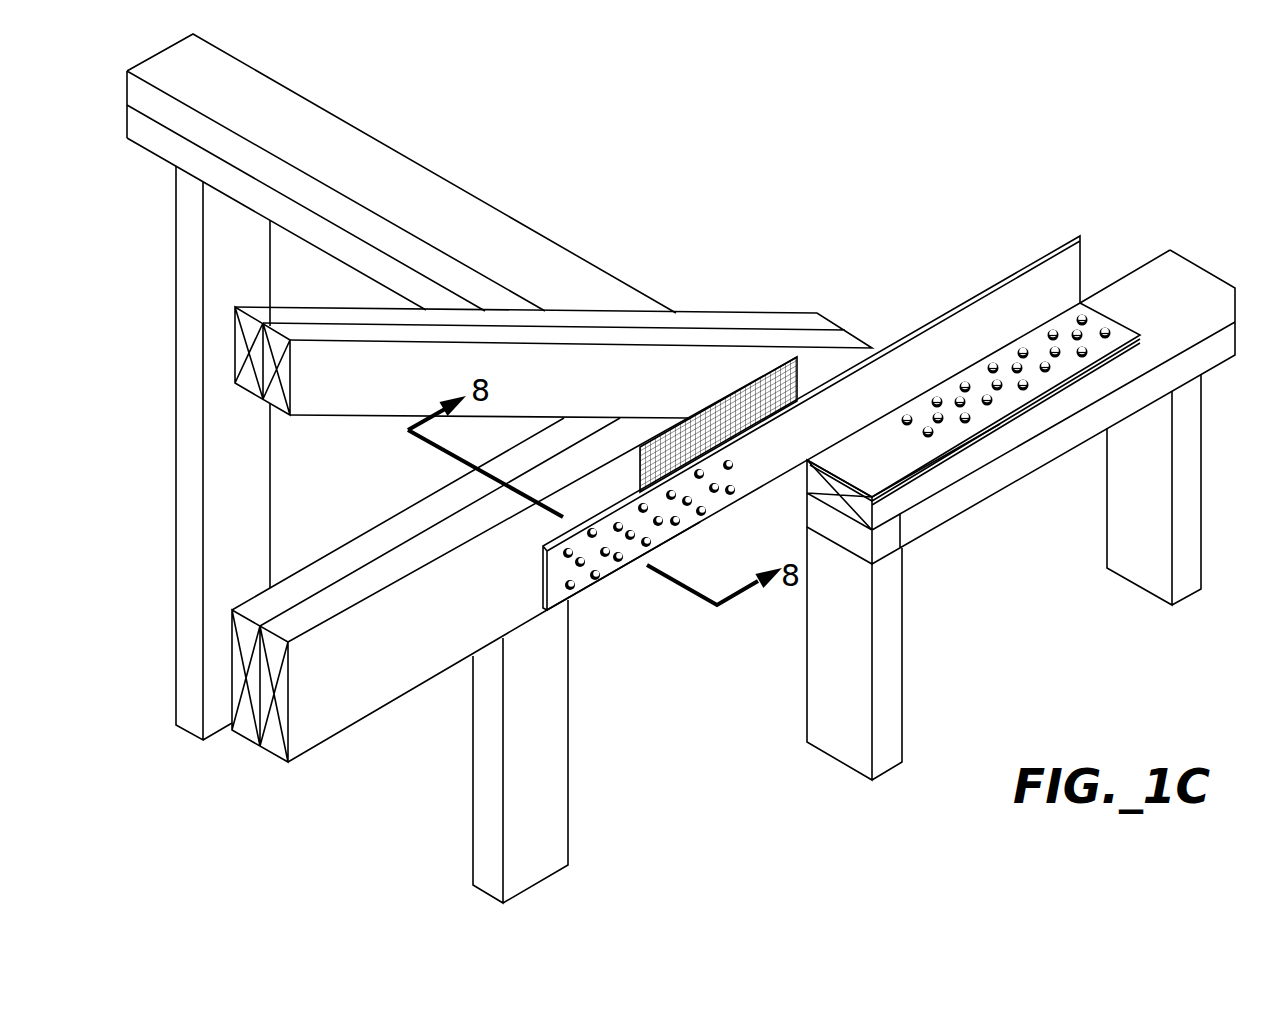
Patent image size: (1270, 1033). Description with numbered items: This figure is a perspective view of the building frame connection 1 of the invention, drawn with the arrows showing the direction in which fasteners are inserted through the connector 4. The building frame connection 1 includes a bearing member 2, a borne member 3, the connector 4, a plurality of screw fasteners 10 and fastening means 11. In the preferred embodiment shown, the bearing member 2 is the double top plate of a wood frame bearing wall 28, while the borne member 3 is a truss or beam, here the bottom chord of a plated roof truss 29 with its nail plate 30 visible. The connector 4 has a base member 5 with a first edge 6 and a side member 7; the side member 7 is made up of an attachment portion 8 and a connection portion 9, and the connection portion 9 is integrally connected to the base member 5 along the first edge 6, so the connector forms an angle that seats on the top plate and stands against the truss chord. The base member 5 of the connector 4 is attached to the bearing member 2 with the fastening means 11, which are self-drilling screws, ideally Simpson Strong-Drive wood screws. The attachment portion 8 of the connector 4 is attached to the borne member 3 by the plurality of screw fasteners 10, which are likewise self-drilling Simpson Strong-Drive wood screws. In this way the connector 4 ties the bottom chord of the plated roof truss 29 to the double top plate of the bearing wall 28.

The building frame connection 1 is at (743, 187).
The bearing member 2 is at (1195, 272).
The borne member 3 is at (377, 694).
The connector 4 is at (868, 320).
The base member 5 is at (940, 460).
The first edge 6 is at (1067, 303).
The side member 7 is at (841, 395).
The attachment portion 8 is at (577, 600).
The connection portion 9 is at (1056, 244).
The screw fasteners 10 is at (702, 518).
The fastening means 11 is at (1058, 372).
The bearing wall 28 is at (927, 551).
The plated roof truss 29 is at (398, 508).
The nail plate 30 is at (748, 395).